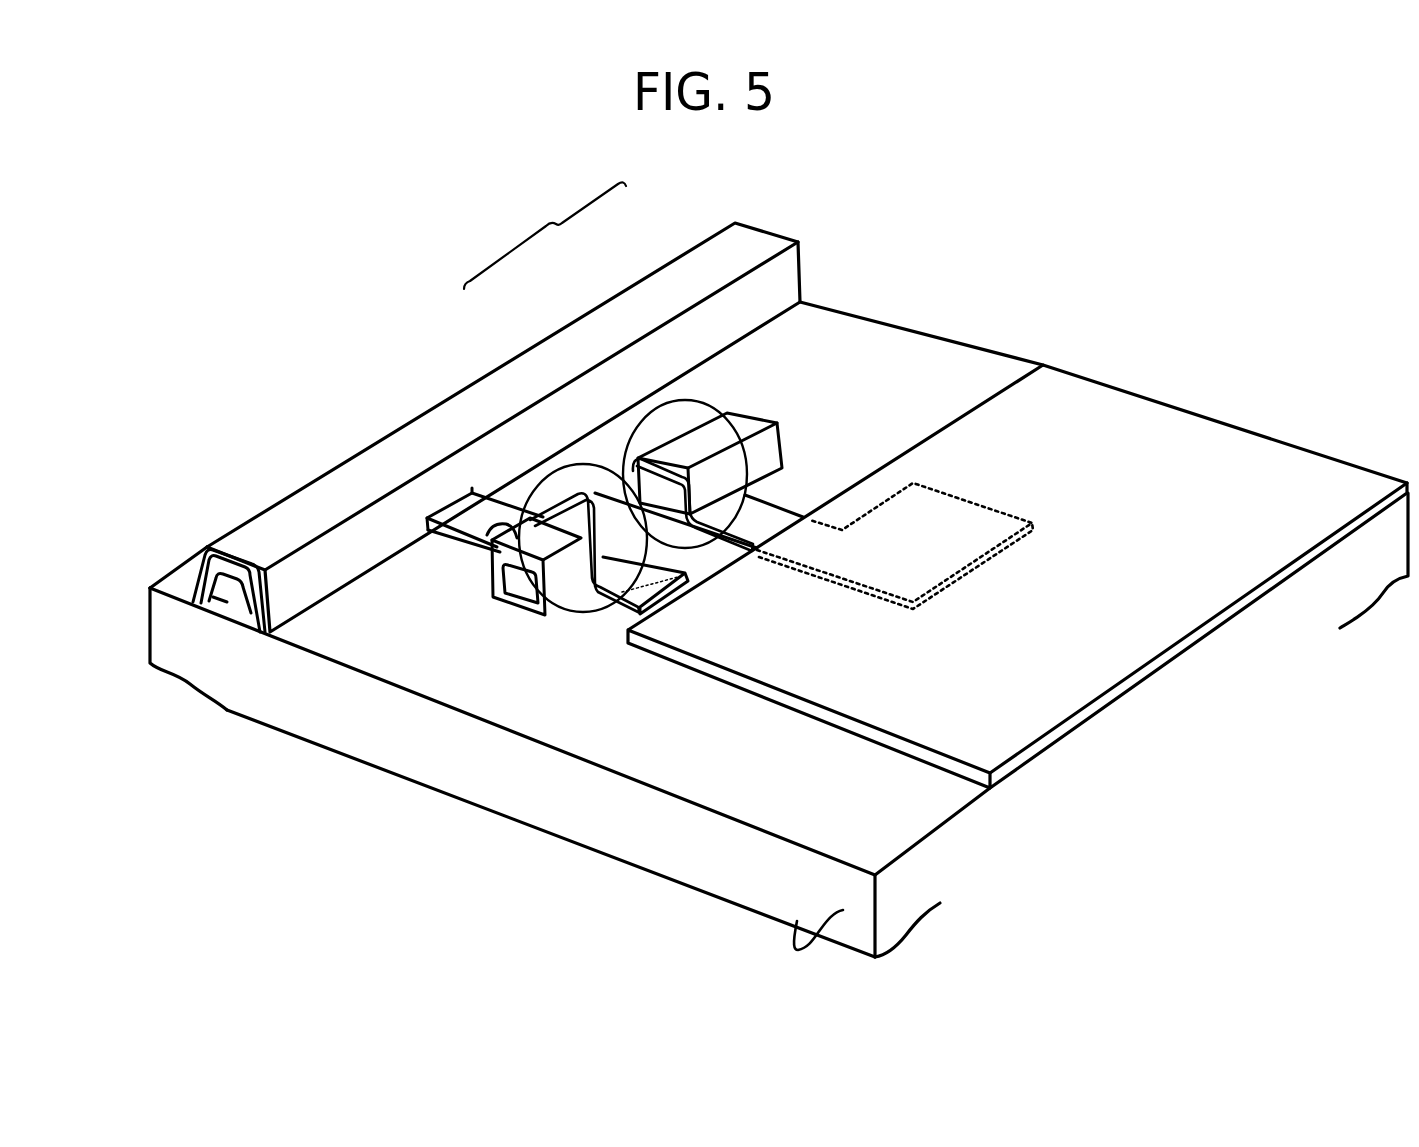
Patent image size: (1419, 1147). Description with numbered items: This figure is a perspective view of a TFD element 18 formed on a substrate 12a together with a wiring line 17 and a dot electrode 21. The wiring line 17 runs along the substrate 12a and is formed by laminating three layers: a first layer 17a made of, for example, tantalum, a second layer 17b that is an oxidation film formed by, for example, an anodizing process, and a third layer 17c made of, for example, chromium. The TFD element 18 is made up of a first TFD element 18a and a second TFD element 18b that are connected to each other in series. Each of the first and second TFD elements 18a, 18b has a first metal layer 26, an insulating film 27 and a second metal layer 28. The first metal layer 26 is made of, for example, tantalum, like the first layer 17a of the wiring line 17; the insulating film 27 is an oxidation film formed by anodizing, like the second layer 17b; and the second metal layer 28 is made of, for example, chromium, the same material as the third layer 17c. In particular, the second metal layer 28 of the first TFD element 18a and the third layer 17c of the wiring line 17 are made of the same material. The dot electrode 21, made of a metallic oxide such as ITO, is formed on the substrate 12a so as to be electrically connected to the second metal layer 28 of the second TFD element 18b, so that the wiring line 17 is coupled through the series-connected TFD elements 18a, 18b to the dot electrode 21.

The substrate 12a is at (836, 916).
The wiring line 17 is at (96, 491).
The first layer 17a is at (197, 563).
The second layer 17b is at (227, 570).
The third layer 17c is at (362, 478).
The TFD element 18 is at (545, 235).
The first TFD element 18a is at (578, 462).
The second TFD element 18b is at (690, 400).
The dot electrode 21 is at (1197, 448).
The first metal layer 26 is at (515, 592).
The insulating film 27 is at (477, 545).
The second metal layer 28 is at (752, 425).